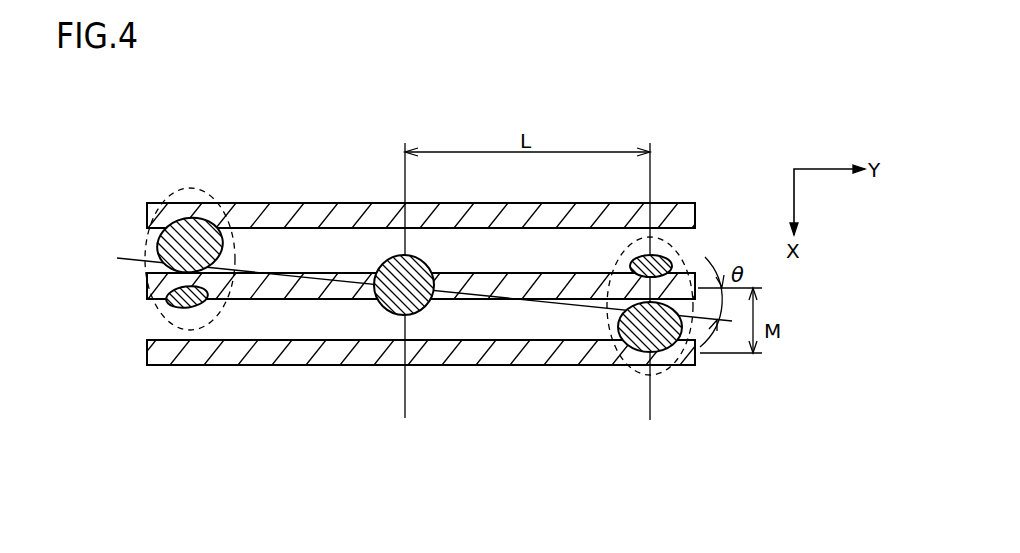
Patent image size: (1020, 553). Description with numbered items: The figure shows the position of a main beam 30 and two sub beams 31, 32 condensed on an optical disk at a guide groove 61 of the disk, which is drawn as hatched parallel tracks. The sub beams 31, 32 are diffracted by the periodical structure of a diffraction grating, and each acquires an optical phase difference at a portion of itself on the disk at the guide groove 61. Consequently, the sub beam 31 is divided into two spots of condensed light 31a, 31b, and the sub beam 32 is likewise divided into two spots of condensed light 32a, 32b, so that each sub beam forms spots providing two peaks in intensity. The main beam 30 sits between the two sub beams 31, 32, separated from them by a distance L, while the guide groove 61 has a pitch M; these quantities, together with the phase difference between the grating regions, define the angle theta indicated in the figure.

The guide groove 61 is at (167, 96).
The main beam 30 is at (393, 273).
The sub beam 31 is at (673, 249).
The spot of condensed light 31a is at (654, 262).
The spot of condensed light 31b is at (655, 333).
The sub beam 32 is at (192, 192).
The spot of condensed light 32a is at (178, 241).
The spot of condensed light 32b is at (180, 300).